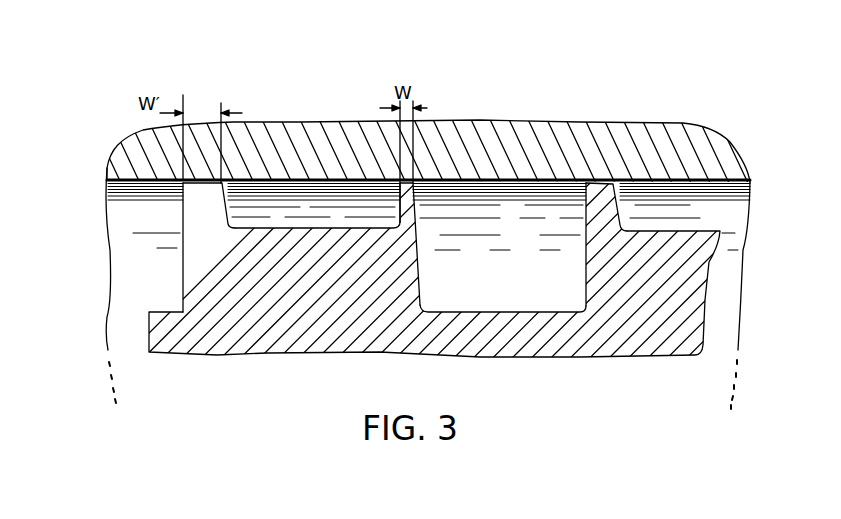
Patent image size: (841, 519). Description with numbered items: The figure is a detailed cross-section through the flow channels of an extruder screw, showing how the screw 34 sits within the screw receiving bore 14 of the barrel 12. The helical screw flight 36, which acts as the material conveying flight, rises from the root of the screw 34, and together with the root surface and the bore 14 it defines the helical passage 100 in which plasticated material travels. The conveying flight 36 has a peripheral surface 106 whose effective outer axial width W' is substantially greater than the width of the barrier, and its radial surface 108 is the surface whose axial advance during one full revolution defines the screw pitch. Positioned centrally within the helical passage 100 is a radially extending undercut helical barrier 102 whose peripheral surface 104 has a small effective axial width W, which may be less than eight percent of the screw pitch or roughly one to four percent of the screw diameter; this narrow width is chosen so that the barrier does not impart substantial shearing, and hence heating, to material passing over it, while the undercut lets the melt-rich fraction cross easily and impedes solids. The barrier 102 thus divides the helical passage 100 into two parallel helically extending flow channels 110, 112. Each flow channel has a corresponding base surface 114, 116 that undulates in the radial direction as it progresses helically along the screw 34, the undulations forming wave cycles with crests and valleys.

The barrel 12 is at (557, 122).
The screw receiving bore 14 is at (722, 186).
The screw 34 is at (210, 357).
The helical screw flight 36 is at (183, 200).
The helical passage 100 is at (285, 212).
The undercut helical barrier 102 is at (413, 237).
The peripheral surface of the helical barrier 104 is at (413, 183).
The peripheral surface of the conveying flight 106 is at (200, 183).
The radial surface 108 is at (183, 290).
The first flow channel 110 is at (346, 216).
The second flow channel 112 is at (503, 283).
The base surface of the first flow channel 114 is at (270, 228).
The base surface of the second flow channel 116 is at (558, 318).